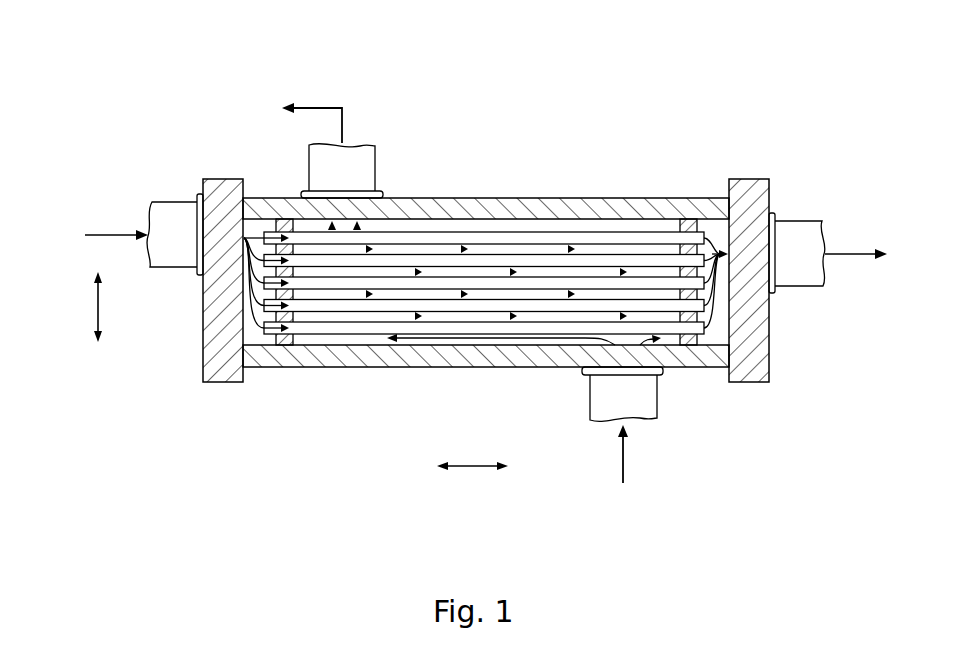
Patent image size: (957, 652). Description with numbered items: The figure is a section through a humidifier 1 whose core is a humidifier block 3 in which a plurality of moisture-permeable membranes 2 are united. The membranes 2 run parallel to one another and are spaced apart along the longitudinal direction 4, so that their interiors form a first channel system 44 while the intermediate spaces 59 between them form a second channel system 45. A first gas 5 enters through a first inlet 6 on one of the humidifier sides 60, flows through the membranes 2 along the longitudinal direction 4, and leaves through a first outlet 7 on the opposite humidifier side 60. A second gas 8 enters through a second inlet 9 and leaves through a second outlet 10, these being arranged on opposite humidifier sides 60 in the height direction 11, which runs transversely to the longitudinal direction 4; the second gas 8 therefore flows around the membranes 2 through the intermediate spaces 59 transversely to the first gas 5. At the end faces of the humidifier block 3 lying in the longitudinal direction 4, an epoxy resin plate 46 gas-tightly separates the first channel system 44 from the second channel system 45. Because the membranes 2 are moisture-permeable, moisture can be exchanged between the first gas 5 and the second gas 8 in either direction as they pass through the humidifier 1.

The humidifier 1 is at (818, 128).
The membranes 2 is at (586, 228).
The humidifier block 3 is at (486, 190).
The longitudinal direction 4 is at (472, 470).
The first gas 5 is at (110, 230).
The first inlet 6 is at (198, 237).
The first outlet 7 is at (773, 252).
The second gas 8 is at (318, 105).
The second inlet 9 is at (623, 376).
The second outlet 10 is at (343, 189).
The height direction 11 is at (97, 305).
The first channel system 44 is at (240, 336).
The second channel system 45 is at (358, 355).
The epoxy resin plate 46 is at (283, 346).
The intermediate spaces 59 is at (635, 250).
The humidifier sides 60 is at (540, 198).